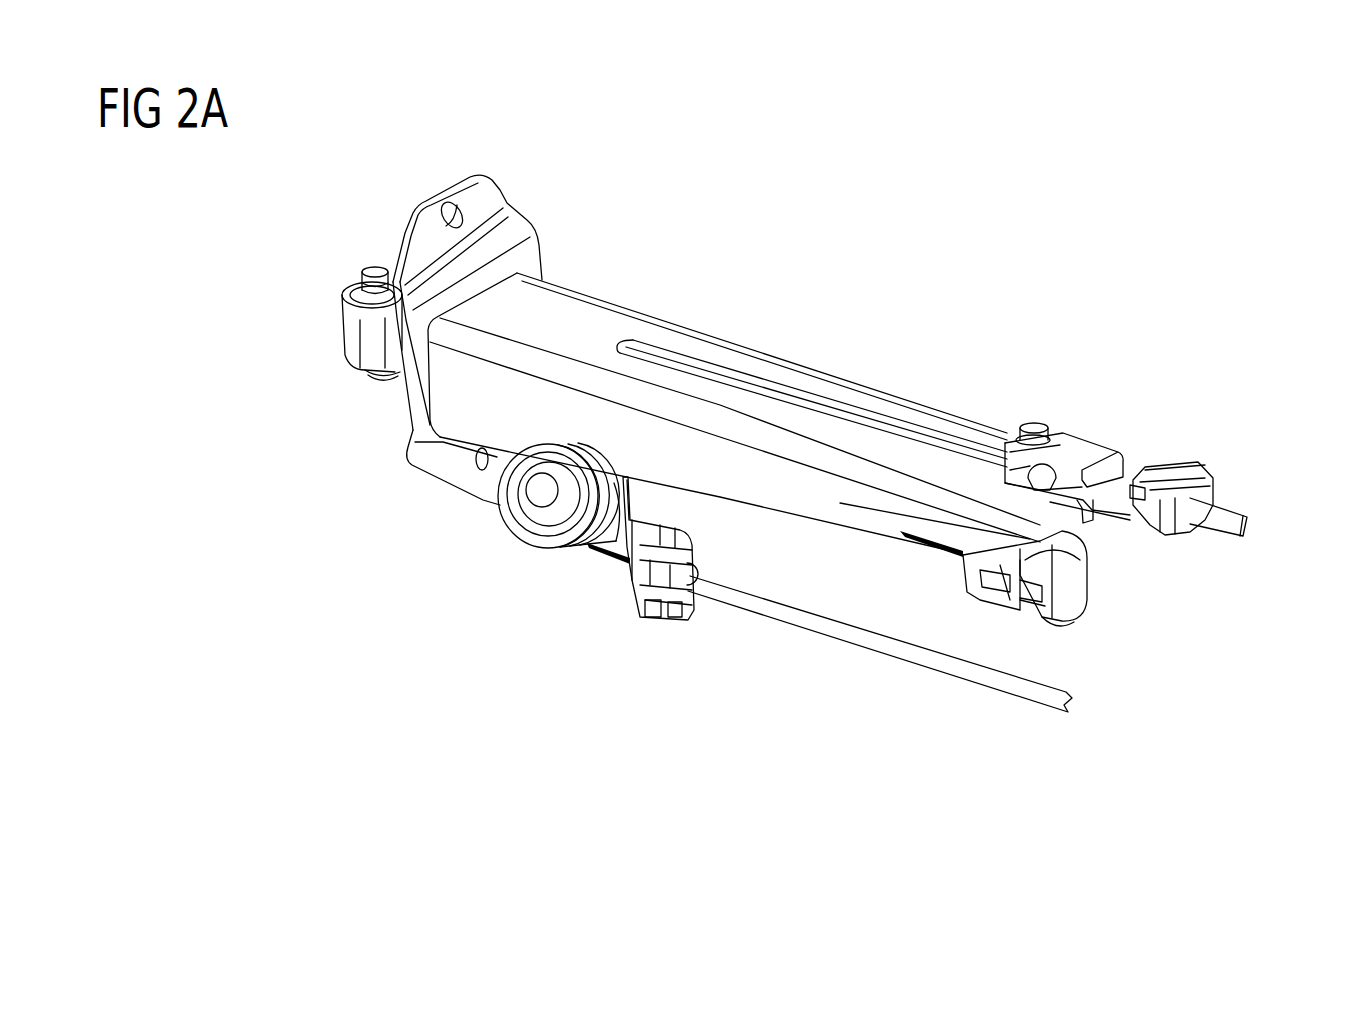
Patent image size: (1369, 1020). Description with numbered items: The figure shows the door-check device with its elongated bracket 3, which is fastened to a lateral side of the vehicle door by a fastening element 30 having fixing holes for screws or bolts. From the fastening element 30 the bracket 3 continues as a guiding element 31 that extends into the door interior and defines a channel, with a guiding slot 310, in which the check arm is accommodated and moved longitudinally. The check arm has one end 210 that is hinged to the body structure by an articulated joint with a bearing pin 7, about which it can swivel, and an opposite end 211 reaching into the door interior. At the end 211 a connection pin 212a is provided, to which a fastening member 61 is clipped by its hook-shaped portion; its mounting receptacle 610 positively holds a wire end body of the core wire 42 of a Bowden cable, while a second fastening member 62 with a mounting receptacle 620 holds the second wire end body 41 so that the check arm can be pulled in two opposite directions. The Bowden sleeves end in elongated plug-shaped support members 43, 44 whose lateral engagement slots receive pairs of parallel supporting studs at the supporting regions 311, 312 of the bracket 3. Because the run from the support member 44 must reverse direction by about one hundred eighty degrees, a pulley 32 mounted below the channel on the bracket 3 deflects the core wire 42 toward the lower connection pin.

The bracket 3 is at (584, 200).
The fastening element 30 is at (478, 193).
The guiding element 31 is at (648, 303).
The guiding slot 310 is at (805, 400).
The supporting region 311 is at (1180, 460).
The supporting region 312 is at (617, 571).
The pulley 32 is at (535, 540).
The bearing pin 7 is at (375, 268).
The end of the check arm 210 is at (347, 325).
The end of the check arm 211 is at (1073, 555).
The connection pin 212a is at (1030, 440).
The wire end body 41 is at (993, 580).
The core wire 42 is at (938, 553).
The support member 43 is at (1205, 497).
The support member 44 is at (684, 635).
The fastening member 61 is at (1092, 419).
The mounting receptacle 610 is at (1043, 437).
The fastening member 62 is at (1078, 648).
The mounting receptacle 620 is at (1003, 597).